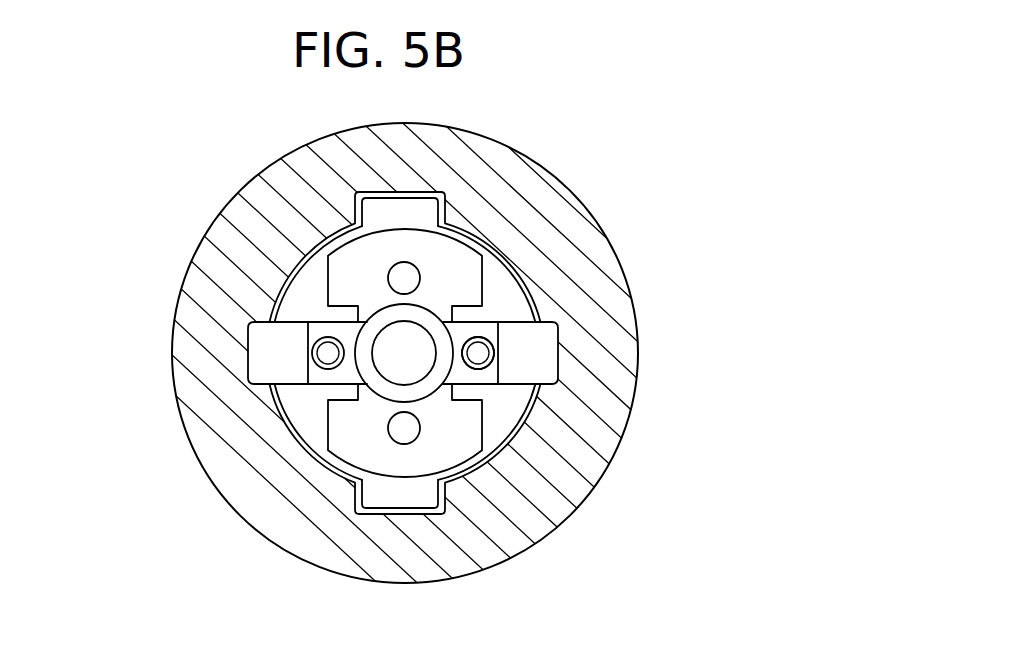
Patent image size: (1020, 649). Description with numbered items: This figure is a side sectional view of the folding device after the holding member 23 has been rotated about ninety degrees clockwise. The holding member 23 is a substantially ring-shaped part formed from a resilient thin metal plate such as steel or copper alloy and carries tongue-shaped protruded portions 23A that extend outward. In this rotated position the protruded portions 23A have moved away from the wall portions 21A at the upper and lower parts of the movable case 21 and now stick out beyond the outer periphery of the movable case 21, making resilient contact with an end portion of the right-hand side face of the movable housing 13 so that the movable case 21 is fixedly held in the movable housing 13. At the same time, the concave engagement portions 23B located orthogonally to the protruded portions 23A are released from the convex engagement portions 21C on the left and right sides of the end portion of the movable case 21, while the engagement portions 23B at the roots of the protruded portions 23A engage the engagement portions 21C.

The movable housing 13 is at (275, 180).
The movable case 21 is at (310, 282).
The wall portion 21A is at (417, 207).
The convex engagement portion 21C is at (480, 353).
The holding member 23 is at (360, 452).
The protruded portion 23A is at (545, 338).
The concave engagement portion 23B is at (483, 333).